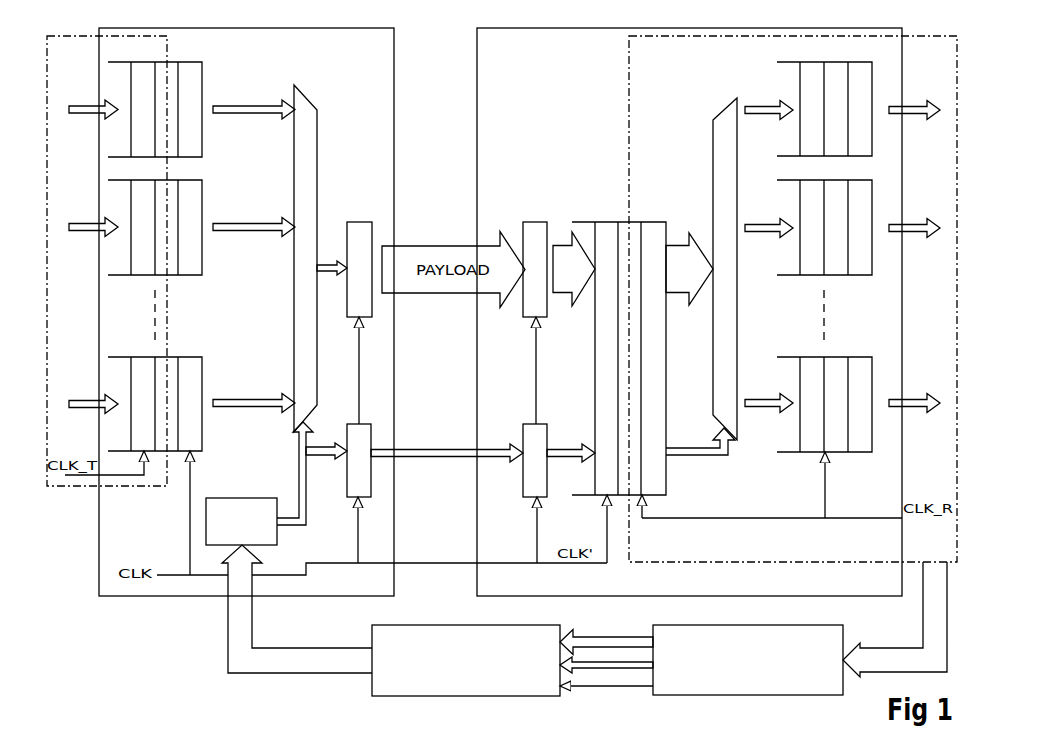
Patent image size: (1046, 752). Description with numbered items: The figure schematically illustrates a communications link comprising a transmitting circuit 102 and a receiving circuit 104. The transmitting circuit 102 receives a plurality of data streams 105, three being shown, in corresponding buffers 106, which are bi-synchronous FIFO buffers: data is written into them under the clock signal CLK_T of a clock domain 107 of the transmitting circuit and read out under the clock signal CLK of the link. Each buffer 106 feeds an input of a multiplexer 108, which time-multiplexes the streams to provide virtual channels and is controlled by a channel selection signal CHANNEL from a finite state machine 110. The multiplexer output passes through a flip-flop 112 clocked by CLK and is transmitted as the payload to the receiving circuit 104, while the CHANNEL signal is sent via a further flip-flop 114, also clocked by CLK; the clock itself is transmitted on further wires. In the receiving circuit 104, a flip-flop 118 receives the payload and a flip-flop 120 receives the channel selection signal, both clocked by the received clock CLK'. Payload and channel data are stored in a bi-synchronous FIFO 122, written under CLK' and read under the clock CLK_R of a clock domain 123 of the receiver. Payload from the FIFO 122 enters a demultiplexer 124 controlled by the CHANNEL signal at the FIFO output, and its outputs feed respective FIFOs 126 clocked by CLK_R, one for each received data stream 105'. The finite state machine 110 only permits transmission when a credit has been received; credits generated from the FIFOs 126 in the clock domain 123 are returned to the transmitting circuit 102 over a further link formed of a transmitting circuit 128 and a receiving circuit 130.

The transmitting circuit 102 is at (387, 117).
The receiving circuit 104 is at (498, 162).
The data streams 105 is at (88, 243).
The data streams received over the communications link 105' is at (918, 282).
The buffers 106 is at (195, 88).
The clock domain 107 is at (168, 56).
The multiplexer 108 is at (304, 96).
The finite state machine 110 is at (242, 498).
The flip-flop 112 is at (358, 224).
The further flip-flop 114 is at (362, 425).
The flip-flop 118 is at (537, 223).
The flip-flop 120 is at (540, 430).
The bi-synchronous FIFO 122 is at (656, 230).
The clock domain 123 is at (925, 44).
The demultiplexer 124 is at (727, 122).
The FIFOs 126 is at (810, 72).
The transmitting circuit 128 is at (763, 638).
The receiving circuit 130 is at (438, 633).